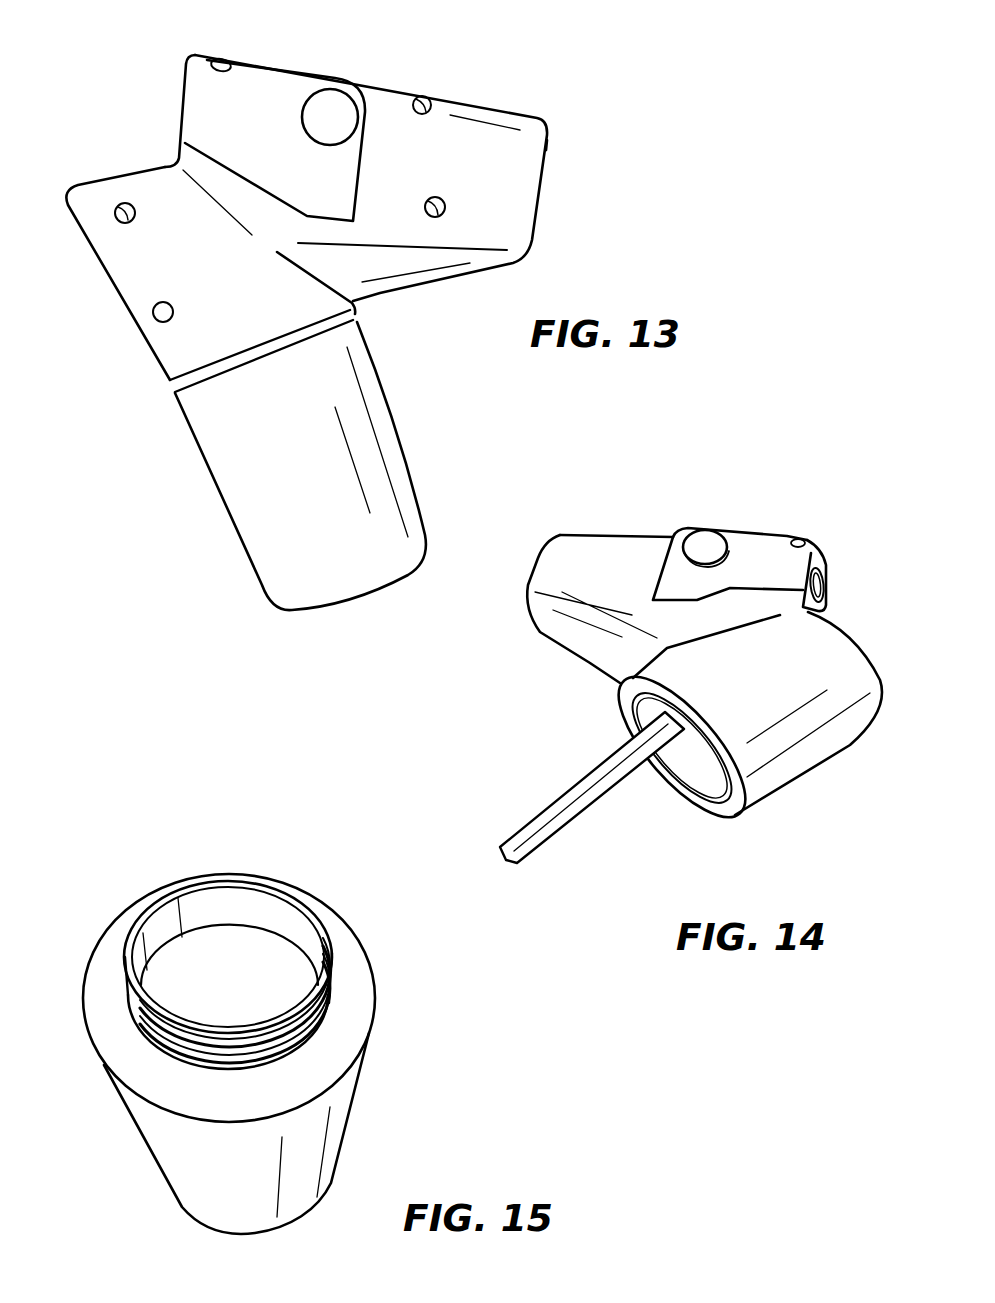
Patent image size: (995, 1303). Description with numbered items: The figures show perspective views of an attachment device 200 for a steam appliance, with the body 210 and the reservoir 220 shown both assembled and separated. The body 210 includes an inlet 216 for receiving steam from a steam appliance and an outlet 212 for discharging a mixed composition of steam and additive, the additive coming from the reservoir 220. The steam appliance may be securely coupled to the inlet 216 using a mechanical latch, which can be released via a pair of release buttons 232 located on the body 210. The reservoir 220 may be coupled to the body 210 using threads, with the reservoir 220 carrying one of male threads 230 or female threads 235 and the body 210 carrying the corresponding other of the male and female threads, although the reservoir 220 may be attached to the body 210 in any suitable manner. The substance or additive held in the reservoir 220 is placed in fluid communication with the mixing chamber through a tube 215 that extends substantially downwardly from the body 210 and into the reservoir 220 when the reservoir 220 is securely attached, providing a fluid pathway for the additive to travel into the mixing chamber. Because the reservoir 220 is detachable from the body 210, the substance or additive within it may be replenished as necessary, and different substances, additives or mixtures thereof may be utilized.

In FIG. 13, the attachment device 200 is at (146, 88).
In FIG. 13, the body 210 is at (523, 177).
In FIG. 14, the body 210 is at (620, 647).
In FIG. 13, the outlet 212 is at (540, 205).
In FIG. 14, the outlet 212 is at (550, 557).
In FIG. 14, the tube 215 is at (595, 783).
In FIG. 13, the inlet 216 is at (182, 125).
In FIG. 14, the inlet 216 is at (823, 591).
In FIG. 13, the reservoir 220 is at (242, 487).
In FIG. 15, the reservoir 220 is at (320, 1064).
In FIG. 15, the male threads 230 is at (330, 985).
In FIG. 13, the release buttons 232 is at (336, 108).
In FIG. 14, the release buttons 232 is at (703, 541).
In FIG. 14, the female threads 235 is at (687, 773).